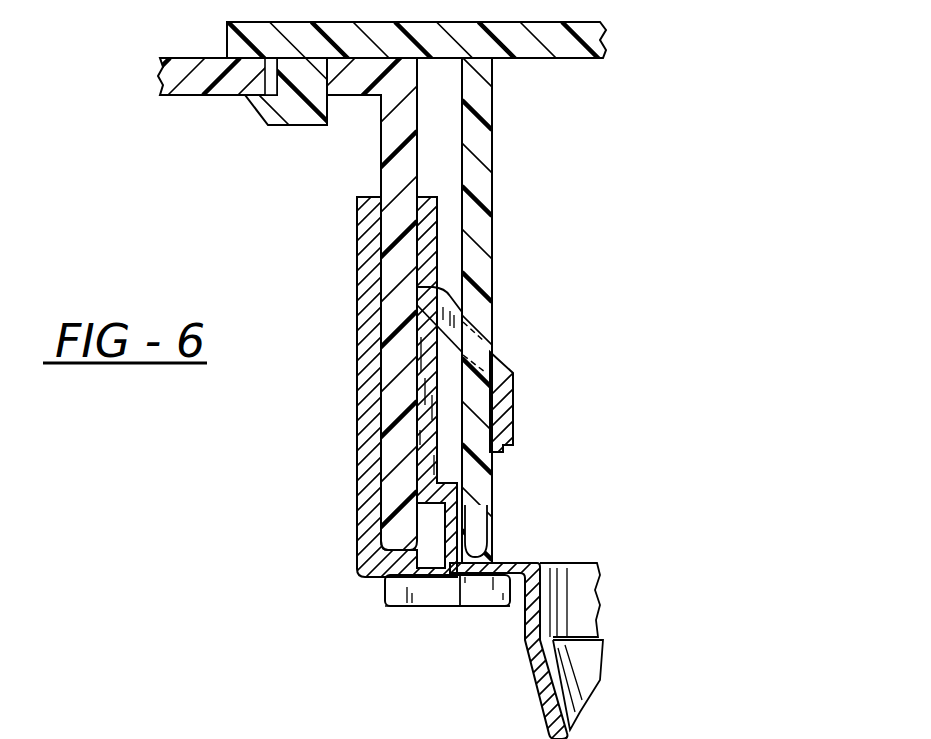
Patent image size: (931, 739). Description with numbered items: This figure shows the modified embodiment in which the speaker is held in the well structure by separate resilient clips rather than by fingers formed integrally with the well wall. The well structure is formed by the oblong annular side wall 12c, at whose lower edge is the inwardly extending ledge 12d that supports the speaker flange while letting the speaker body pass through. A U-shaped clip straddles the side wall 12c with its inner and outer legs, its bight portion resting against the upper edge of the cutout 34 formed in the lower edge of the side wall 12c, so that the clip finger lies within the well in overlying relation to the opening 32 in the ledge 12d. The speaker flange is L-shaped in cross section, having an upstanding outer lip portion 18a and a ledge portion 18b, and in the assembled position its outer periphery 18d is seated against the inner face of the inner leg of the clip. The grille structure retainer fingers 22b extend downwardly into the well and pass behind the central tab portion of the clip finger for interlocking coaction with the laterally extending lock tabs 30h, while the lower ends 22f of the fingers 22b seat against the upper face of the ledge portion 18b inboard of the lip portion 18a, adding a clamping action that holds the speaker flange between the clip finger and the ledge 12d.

The annular side wall 12c is at (381, 157).
The retainer fingers 22b is at (493, 188).
The lock tabs 30h is at (515, 402).
The outer periphery 18d is at (437, 520).
The lip portion 18a is at (462, 522).
The lower ends 22f is at (503, 561).
The cutout 34 is at (387, 592).
The opening 32 is at (420, 605).
The ledge portion 18b is at (462, 600).
The ledge 12d is at (489, 605).